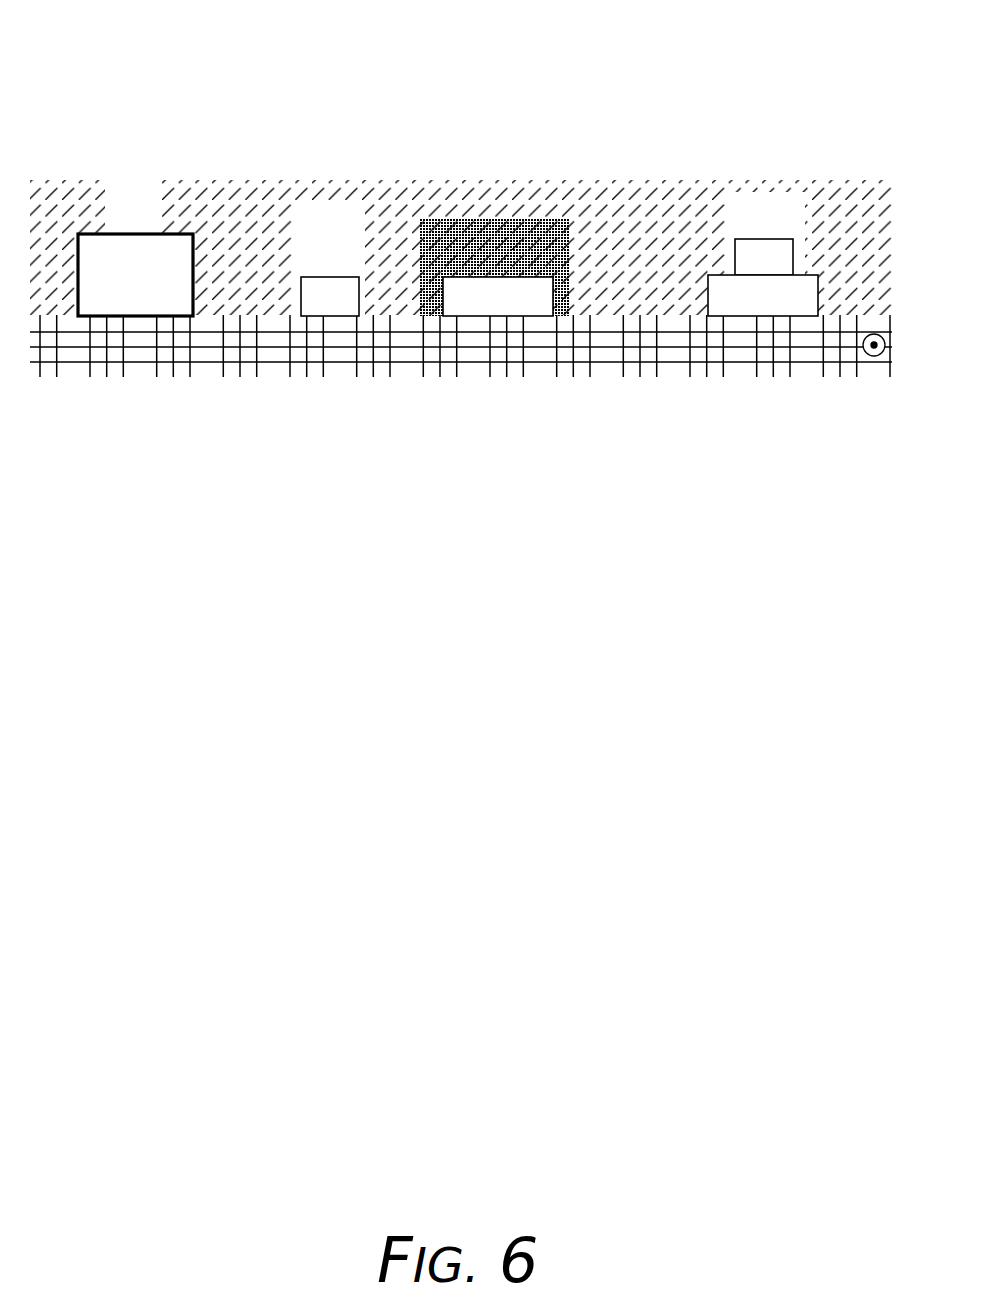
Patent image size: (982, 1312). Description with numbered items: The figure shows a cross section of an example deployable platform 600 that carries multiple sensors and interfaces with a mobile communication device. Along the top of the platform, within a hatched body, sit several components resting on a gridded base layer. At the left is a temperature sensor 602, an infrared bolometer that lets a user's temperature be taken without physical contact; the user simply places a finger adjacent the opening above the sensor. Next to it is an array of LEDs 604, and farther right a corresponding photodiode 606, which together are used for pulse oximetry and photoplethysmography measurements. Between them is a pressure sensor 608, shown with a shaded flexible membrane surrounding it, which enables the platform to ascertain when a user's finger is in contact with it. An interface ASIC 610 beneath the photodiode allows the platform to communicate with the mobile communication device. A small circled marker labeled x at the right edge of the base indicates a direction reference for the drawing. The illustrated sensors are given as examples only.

The deployable platform 600 is at (500, 66).
The temperature sensor 602 is at (157, 287).
The array of LEDs 604 is at (330, 298).
The photodiode 606 is at (763, 248).
The pressure sensor 608 is at (497, 298).
The interface ASIC 610 is at (784, 307).
The x-direction reference point x is at (876, 356).